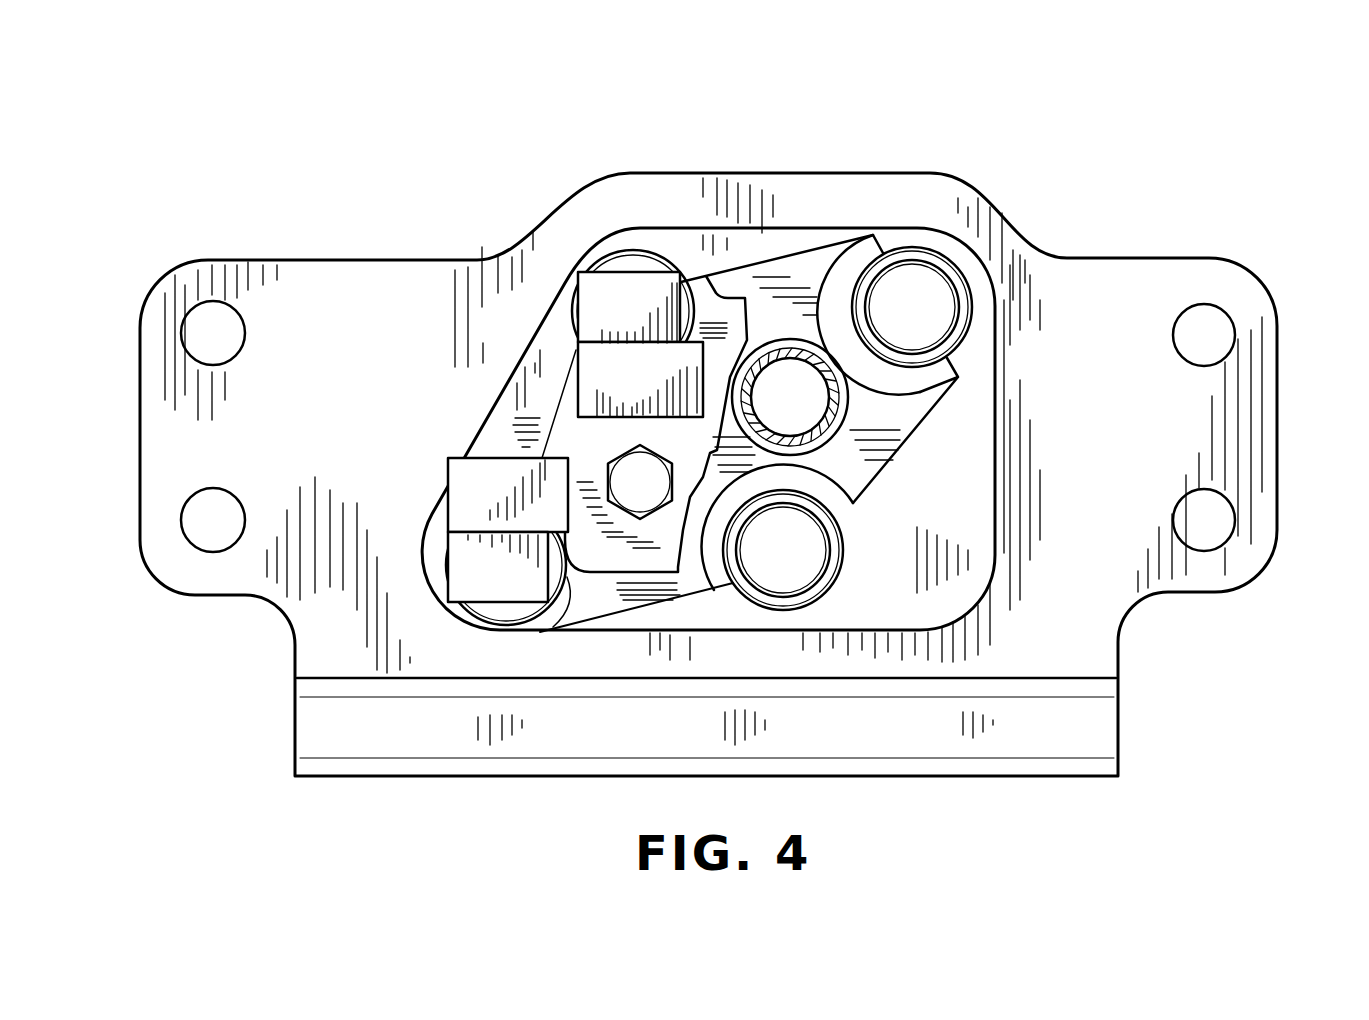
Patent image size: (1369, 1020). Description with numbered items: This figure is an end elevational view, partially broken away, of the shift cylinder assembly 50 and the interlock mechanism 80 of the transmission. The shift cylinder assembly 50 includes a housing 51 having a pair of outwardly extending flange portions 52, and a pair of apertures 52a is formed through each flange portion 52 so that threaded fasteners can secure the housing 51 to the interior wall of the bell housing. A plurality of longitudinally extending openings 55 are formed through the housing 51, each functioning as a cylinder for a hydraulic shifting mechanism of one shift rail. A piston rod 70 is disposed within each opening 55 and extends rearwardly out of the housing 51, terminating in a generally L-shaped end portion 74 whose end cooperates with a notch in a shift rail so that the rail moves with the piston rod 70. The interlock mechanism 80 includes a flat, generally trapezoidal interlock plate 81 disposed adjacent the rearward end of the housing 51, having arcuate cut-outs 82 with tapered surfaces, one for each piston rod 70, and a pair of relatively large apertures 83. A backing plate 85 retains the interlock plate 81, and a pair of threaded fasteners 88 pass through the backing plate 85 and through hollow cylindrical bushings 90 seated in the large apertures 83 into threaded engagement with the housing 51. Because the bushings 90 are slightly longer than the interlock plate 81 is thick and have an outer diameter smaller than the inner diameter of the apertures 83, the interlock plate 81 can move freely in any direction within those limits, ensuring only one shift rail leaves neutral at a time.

The shift cylinder assembly 50 is at (1019, 130).
The housing 51 is at (697, 197).
The flange portions 52 is at (190, 440).
The apertures 52a is at (195, 330).
The openings 55 is at (937, 273).
The piston rod 70 is at (622, 262).
The L-shaped end portion 74 is at (602, 362).
The interlock mechanism 80 is at (404, 567).
The interlock plate 81 is at (785, 262).
The arcuate cut-outs 82 is at (885, 343).
The apertures 83 is at (847, 403).
The backing plate 85 is at (603, 557).
The threaded fasteners 88 is at (643, 503).
The bushings 90 is at (823, 430).